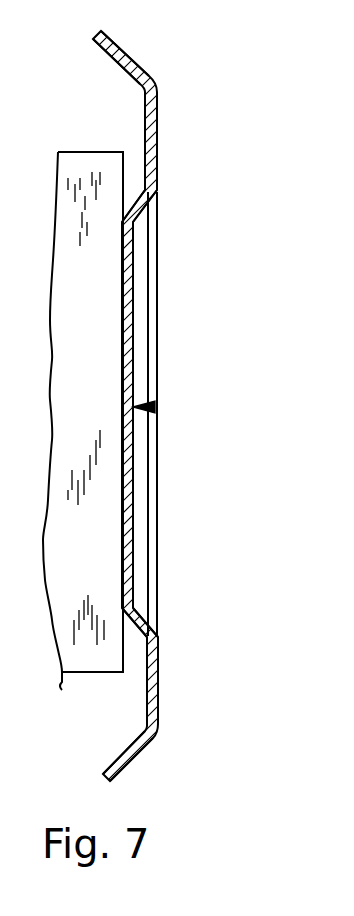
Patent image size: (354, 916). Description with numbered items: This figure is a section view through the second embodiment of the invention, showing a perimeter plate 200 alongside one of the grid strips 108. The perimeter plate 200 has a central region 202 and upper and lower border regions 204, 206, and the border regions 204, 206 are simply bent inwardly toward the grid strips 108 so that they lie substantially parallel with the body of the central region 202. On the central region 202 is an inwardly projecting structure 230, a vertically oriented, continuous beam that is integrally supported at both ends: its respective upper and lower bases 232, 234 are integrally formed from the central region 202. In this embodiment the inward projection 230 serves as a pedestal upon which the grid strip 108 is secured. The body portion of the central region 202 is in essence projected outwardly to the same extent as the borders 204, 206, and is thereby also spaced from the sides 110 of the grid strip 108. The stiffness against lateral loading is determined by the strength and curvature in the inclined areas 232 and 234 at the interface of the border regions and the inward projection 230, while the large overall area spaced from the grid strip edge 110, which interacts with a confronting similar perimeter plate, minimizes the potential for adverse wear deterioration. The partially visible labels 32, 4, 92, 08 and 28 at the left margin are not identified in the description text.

The grid strip 108 is at (88, 163).
The side of grid strip 110 is at (137, 655).
The perimeter plate 200 is at (155, 408).
The central region 202 is at (157, 340).
The upper border region 204 is at (150, 80).
The lower border region 206 is at (158, 700).
The inward projection 230 is at (61, 415).
The upper base 232 is at (122, 213).
The lower base 234 is at (158, 636).
The element 32 is at (122, 357).
The element 4 is at (29, 188).
The element 92 is at (29, 454).
The element 08 is at (70, 525).
The element 28 is at (32, 715).